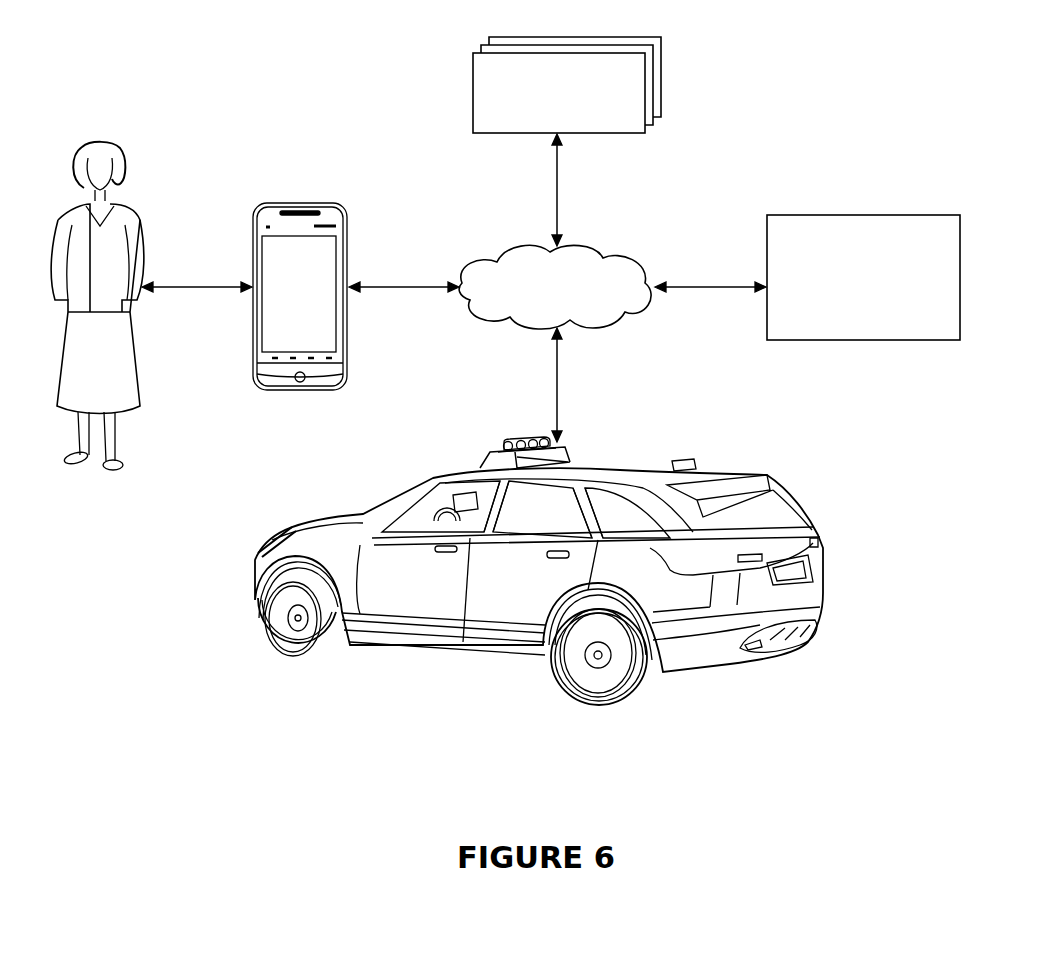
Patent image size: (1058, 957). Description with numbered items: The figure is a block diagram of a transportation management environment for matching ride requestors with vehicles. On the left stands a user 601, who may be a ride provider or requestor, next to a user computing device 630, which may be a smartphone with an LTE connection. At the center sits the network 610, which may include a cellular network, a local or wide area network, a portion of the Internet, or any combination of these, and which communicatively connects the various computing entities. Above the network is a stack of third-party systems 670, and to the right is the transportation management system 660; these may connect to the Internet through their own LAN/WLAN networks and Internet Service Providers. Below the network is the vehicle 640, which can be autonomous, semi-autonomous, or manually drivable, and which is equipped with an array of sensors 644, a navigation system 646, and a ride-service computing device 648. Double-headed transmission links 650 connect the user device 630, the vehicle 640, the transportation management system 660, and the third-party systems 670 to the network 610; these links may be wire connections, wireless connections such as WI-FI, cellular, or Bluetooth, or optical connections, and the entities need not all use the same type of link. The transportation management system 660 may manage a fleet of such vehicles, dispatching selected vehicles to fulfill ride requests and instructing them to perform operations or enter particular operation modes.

The user 601 is at (89, 143).
The user computing device 630 is at (280, 203).
The network 610 is at (513, 256).
The third-party systems 670 is at (473, 93).
The transportation management system 660 is at (885, 215).
The transmission links 650 is at (184, 284).
The vehicle 640 is at (255, 595).
The array of sensors 644 is at (525, 440).
The navigation system 646 is at (572, 452).
The ride-service computing device 648 is at (452, 500).